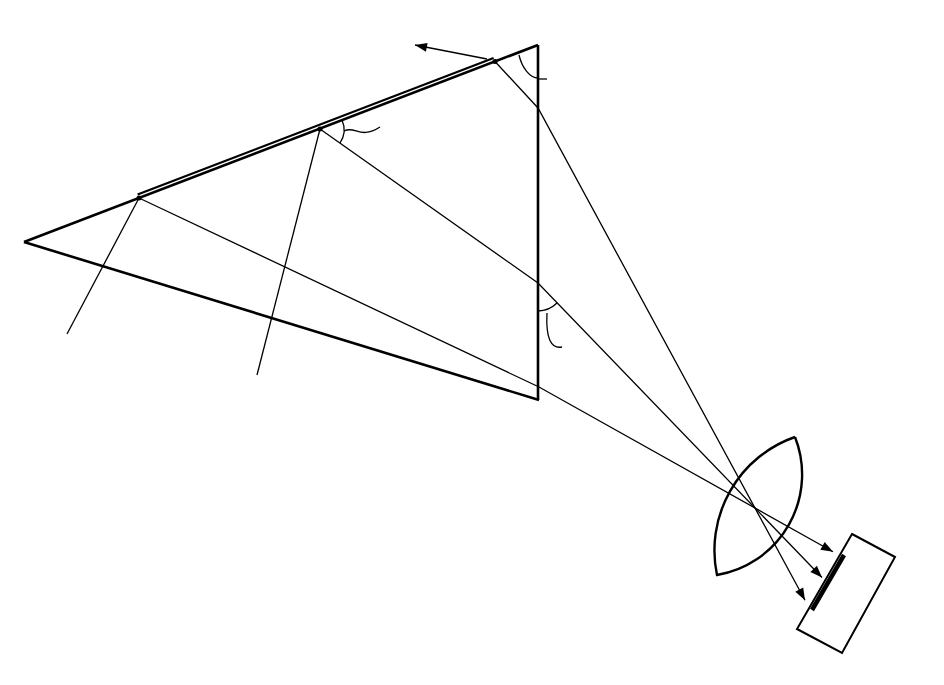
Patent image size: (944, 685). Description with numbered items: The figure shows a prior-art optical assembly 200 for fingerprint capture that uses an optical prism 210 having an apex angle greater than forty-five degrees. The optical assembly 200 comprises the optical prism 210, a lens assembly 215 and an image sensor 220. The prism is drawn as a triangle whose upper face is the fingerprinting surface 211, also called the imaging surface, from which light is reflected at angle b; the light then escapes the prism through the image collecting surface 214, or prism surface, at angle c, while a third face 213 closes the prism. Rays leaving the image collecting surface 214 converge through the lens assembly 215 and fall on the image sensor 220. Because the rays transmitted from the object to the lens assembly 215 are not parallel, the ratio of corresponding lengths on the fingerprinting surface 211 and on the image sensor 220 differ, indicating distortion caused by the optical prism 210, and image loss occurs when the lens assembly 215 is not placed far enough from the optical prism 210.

The optical assembly 200 is at (647, 162).
The optical prism 210 is at (333, 325).
The fingerprinting surface 211 is at (53, 231).
The second (bottom) surface of prism 213 is at (453, 378).
The image collecting surface 214 is at (539, 146).
The lens assembly 215 is at (764, 448).
The image sensor 220 is at (885, 545).